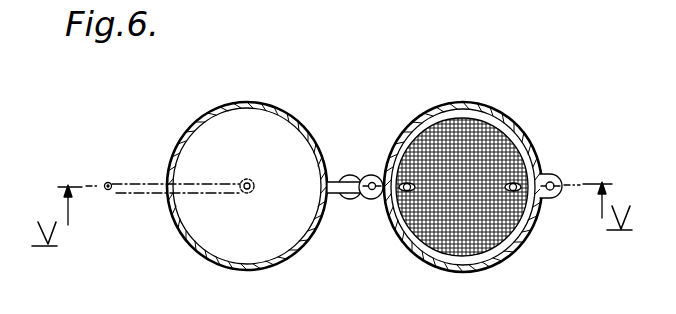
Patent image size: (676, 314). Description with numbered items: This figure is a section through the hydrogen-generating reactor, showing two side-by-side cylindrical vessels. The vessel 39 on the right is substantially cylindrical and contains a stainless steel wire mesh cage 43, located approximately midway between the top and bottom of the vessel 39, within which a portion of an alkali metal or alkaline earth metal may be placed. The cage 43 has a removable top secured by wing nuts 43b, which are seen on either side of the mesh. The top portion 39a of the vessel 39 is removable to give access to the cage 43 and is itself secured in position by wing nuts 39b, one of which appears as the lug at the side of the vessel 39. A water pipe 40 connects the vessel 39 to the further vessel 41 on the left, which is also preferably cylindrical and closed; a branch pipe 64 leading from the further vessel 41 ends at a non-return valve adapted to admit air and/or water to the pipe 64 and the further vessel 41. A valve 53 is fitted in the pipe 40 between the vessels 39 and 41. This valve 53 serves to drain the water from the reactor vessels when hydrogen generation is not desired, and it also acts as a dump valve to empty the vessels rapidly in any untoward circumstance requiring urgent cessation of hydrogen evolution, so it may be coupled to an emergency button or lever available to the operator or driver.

The vessel 39 is at (503, 112).
The top portion 39a is at (462, 103).
The wing nuts 39b is at (553, 200).
The water pipe 40 is at (250, 182).
The further vessel 41 is at (212, 112).
The wire mesh cage 43 is at (498, 243).
The wing nuts 43b is at (509, 184).
The valve 53 is at (362, 174).
The branch pipe 64 is at (111, 183).